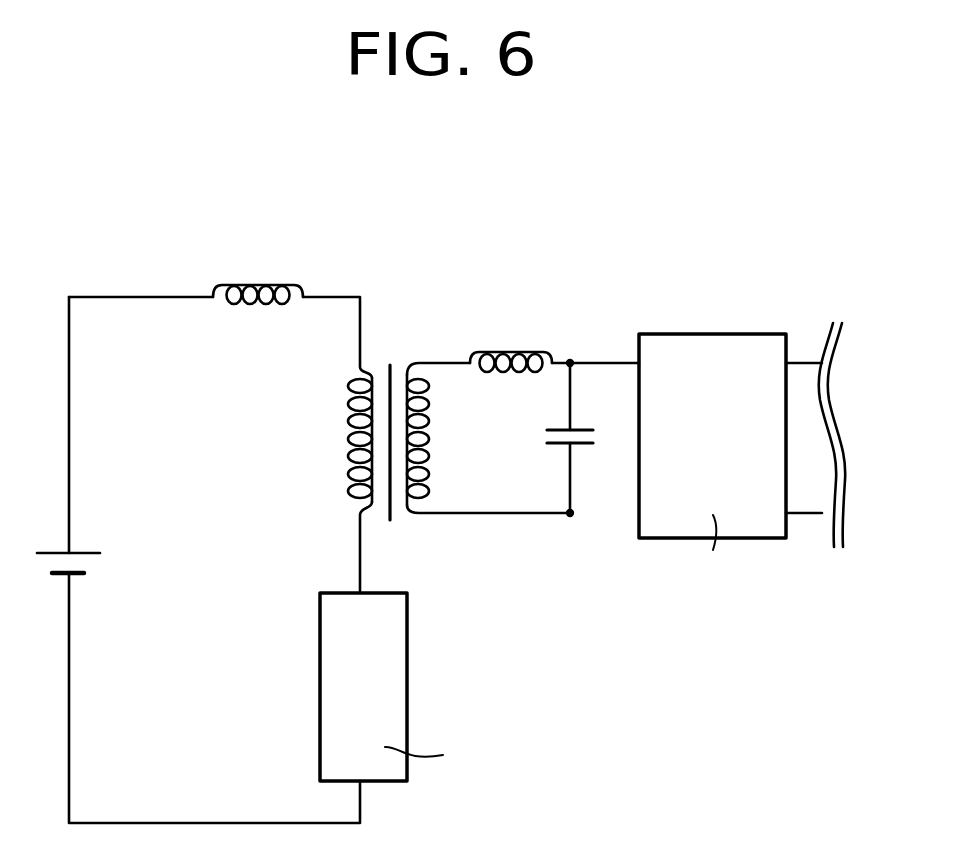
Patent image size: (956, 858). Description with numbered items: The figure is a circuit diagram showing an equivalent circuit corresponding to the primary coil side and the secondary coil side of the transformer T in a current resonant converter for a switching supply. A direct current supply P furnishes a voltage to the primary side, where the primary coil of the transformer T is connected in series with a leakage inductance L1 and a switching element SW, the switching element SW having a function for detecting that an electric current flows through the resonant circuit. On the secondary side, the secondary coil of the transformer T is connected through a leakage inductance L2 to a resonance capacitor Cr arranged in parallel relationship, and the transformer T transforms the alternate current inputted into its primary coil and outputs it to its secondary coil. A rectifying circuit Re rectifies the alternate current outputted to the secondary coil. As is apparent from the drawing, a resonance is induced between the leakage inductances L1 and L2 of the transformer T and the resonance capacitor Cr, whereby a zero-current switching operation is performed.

The direct current supply P is at (63, 543).
The leakage inductance L1 is at (258, 274).
The transformer T is at (391, 357).
The leakage inductance L2 is at (511, 342).
The resonance capacitor Cr is at (555, 444).
The rectifying circuit Re is at (693, 334).
The switching element SW is at (407, 685).